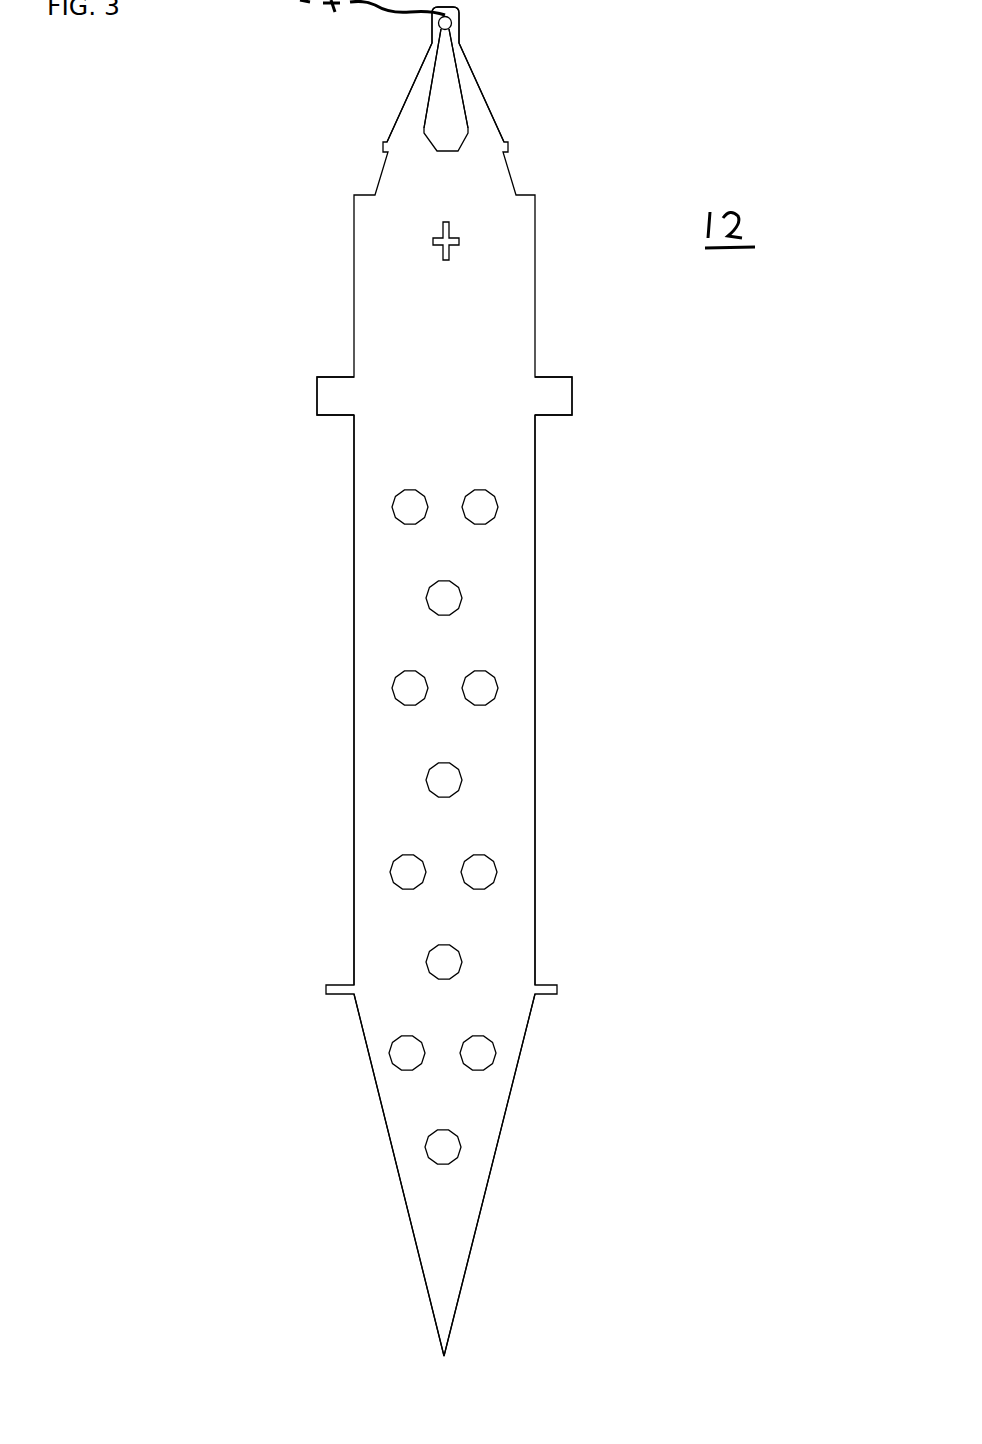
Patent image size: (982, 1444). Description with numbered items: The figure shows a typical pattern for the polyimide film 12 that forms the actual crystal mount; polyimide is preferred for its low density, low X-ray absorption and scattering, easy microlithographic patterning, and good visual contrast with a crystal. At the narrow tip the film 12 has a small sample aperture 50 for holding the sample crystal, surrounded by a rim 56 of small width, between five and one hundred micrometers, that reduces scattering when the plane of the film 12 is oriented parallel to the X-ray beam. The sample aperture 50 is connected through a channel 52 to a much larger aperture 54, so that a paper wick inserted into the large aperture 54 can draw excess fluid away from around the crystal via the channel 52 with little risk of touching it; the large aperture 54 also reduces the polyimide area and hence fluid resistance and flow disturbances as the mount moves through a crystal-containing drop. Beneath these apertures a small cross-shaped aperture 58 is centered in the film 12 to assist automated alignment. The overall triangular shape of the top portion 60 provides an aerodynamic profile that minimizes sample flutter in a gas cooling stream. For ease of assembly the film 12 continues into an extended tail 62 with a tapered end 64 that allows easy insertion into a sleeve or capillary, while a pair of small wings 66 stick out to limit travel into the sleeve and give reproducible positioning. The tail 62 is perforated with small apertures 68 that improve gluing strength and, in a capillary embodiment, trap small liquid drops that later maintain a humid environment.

The polyimide film 12 is at (500, 593).
The sample aperture 50 is at (441, 23).
The channel 52 is at (448, 49).
The large aperture 54 is at (447, 129).
The rim 56 is at (458, 15).
The cross-shaped aperture 58 is at (433, 241).
The top portion 60 is at (427, 82).
The extended tail 62 is at (377, 733).
The tapered end 64 is at (462, 1188).
The wings 66 is at (557, 397).
The apertures 68 is at (407, 507).